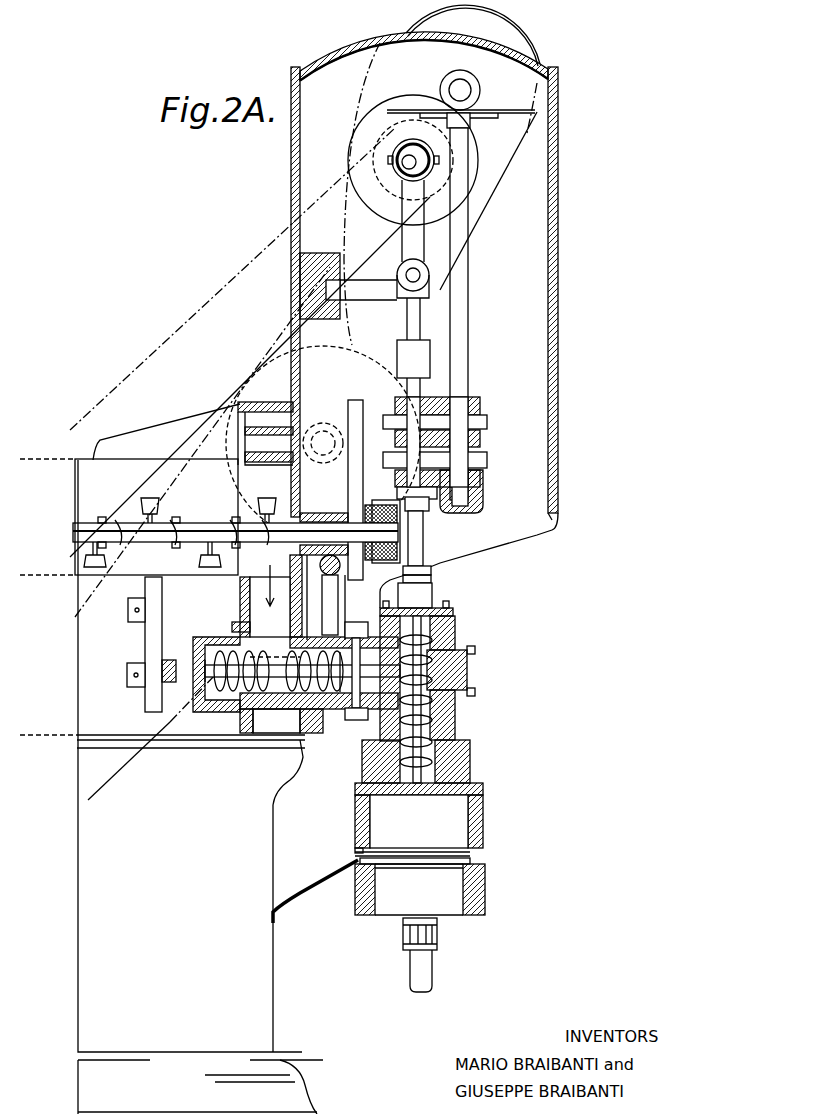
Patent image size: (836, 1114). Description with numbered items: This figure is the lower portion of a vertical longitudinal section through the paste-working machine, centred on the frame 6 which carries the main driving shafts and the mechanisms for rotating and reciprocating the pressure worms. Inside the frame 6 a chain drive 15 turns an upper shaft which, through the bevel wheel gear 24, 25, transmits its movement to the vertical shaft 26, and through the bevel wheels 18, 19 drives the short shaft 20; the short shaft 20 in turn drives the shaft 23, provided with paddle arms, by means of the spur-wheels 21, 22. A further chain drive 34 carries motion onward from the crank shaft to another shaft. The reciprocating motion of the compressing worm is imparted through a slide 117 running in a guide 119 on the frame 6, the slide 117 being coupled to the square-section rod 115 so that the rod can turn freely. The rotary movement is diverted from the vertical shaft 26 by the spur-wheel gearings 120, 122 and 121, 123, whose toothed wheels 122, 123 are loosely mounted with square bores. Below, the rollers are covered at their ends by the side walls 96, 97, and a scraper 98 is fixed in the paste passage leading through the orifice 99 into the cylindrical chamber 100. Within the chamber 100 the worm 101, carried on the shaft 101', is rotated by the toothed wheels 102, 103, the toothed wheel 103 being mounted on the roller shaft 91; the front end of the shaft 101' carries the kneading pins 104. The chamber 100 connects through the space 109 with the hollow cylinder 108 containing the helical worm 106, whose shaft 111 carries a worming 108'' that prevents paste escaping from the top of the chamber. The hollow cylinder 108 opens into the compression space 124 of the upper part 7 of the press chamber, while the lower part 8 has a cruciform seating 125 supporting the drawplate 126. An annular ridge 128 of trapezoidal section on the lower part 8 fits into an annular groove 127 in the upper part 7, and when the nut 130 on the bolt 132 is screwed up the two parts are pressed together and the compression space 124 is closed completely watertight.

The frame 6 is at (558, 300).
The chain drive 15 is at (498, 35).
The bevel wheel gear 24 is at (440, 78).
The bevel wheel gear 25 is at (517, 107).
The vertical shaft 26 is at (468, 278).
The guide 119 is at (398, 258).
The slide 117 is at (372, 292).
The rod of square cross section 115 is at (420, 396).
The toothed wheel 122 is at (445, 400).
The spur-wheel 120 is at (428, 421).
The spur-wheel 121 is at (428, 460).
The toothed wheel 123 is at (427, 462).
The spur-wheel 22 is at (425, 565).
The short shaft 20 is at (257, 440).
The bevel wheel 18 is at (335, 422).
The bevel wheel 19 is at (310, 430).
The spur-wheel 21 is at (358, 400).
The shaft 23 is at (82, 521).
The chain drive 34 is at (193, 315).
The side wall 96 is at (245, 600).
The side wall 97 is at (338, 598).
The scraper 98 is at (200, 662).
The toothed wheel 103 is at (150, 586).
The shaft 91 is at (128, 610).
The toothed wheel 102 is at (145, 690).
The orifice 99 is at (275, 650).
The cylindrical chamber 100 is at (228, 708).
The worm 101 is at (261, 719).
The shaft 101' is at (328, 707).
The kneading pins 104 is at (357, 735).
The worming 108'' is at (493, 633).
The space 109 is at (470, 667).
The shaft 111 is at (475, 680).
The hollow cylinder 108 is at (487, 715).
The helical worm 106 is at (470, 736).
The upper part of compression chamber 7 is at (483, 815).
The compression space 124 is at (450, 828).
The drawplate 126 is at (388, 852).
The annular ridge 128 is at (470, 858).
The annular groove 127 is at (358, 857).
The lower part of compression chamber 8 is at (485, 889).
The cruciform seating 125 is at (410, 870).
The nut 130 is at (437, 935).
The bolt 132 is at (432, 970).